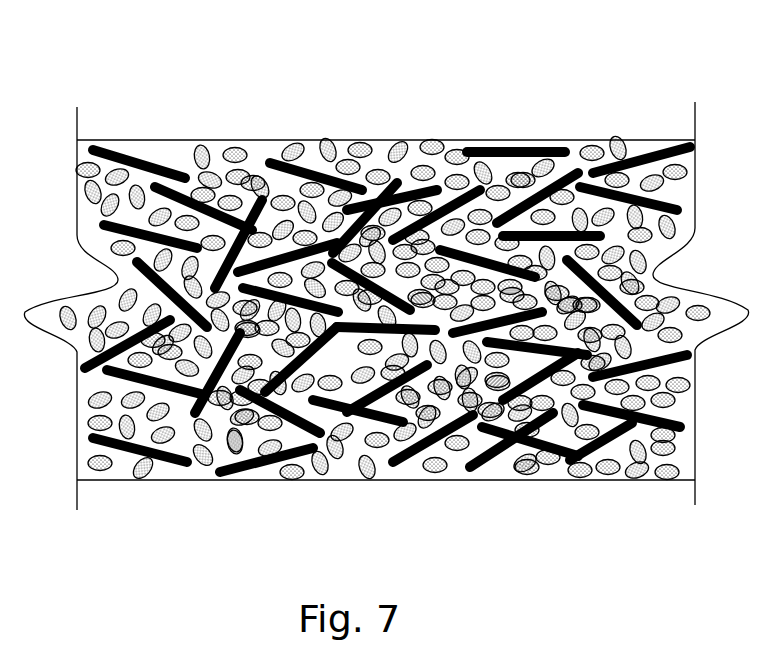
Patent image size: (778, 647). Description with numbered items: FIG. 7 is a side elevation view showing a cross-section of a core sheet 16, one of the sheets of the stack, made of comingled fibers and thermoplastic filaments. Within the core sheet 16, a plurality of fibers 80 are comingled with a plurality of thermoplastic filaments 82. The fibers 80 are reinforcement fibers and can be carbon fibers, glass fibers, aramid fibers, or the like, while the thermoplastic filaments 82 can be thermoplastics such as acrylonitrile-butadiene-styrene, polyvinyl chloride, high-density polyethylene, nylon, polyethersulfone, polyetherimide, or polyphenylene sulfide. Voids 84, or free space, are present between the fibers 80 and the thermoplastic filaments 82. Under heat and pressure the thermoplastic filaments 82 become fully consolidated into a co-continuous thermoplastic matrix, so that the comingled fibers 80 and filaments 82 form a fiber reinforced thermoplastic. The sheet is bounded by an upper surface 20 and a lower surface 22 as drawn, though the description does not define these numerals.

The core sheet 16 is at (526, 72).
The first surface 20 is at (232, 137).
The second surface 22 is at (318, 481).
The fibers 80 is at (272, 163).
The thermoplastic filaments 82 is at (432, 140).
The voids 84 is at (170, 155).